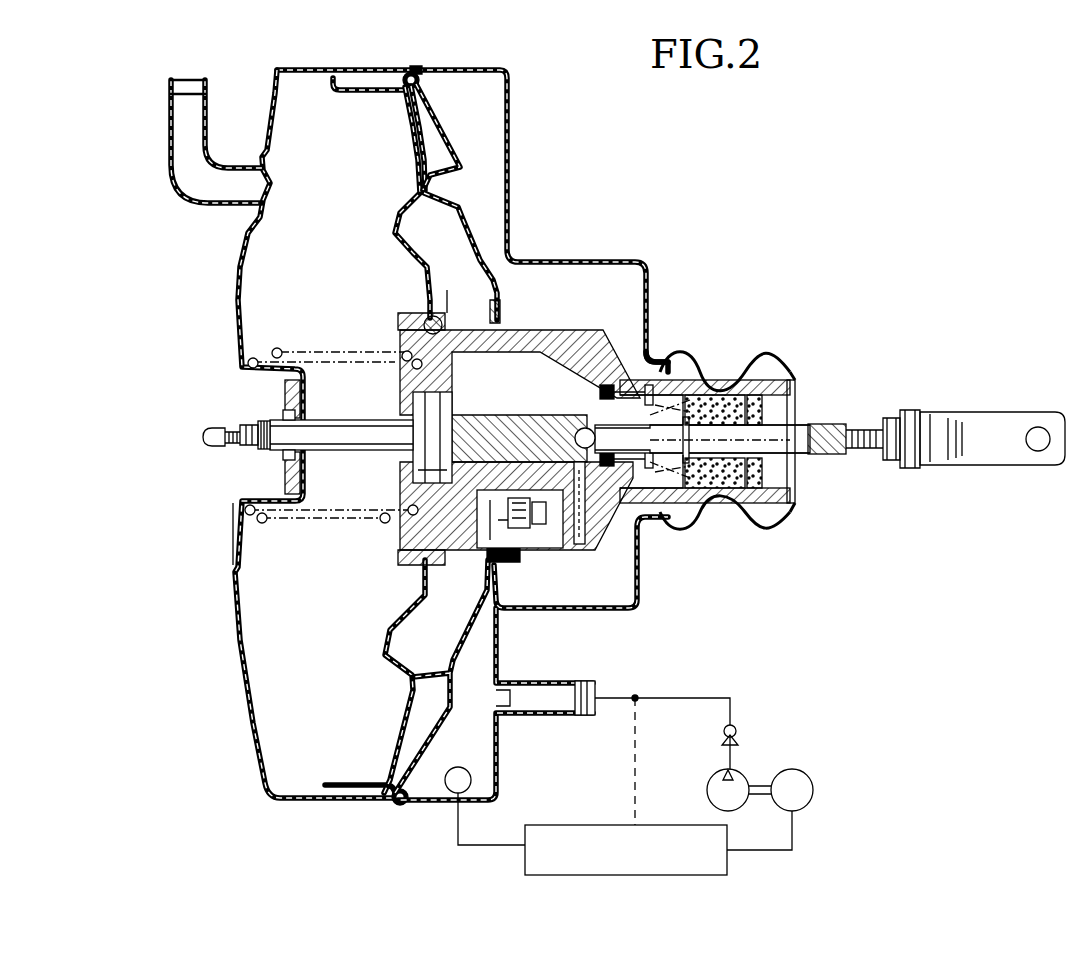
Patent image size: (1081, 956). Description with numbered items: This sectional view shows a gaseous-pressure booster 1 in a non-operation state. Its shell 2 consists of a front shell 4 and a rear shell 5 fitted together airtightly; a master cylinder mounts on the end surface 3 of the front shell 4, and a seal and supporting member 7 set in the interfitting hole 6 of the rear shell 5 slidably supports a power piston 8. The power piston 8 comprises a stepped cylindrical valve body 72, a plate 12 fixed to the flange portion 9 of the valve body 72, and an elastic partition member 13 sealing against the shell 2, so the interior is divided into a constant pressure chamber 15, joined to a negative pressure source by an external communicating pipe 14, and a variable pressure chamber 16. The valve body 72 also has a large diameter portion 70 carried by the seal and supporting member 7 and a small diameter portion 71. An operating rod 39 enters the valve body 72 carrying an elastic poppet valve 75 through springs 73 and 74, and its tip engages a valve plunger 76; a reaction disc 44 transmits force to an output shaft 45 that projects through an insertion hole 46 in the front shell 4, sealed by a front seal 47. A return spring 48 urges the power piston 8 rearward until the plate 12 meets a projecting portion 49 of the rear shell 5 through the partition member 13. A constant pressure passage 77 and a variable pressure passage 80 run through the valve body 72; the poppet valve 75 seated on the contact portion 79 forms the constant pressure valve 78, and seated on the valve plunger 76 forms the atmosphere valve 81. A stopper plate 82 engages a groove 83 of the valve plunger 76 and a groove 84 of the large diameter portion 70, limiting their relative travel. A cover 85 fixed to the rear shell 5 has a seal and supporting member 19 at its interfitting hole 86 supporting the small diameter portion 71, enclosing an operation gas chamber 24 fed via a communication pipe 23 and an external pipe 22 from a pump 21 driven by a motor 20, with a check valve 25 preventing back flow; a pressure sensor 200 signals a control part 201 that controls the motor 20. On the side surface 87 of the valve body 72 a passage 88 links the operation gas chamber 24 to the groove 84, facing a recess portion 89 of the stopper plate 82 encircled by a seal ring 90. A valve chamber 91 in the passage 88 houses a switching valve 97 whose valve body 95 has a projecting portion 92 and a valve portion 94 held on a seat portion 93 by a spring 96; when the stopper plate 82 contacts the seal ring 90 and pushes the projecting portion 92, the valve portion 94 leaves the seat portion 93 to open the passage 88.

The booster of the gaseous pressure type 1 is at (857, 198).
The shell 2 is at (268, 106).
The end surface 3 is at (240, 358).
The front shell 4 is at (238, 278).
The rear shell 5 is at (440, 132).
The interfitting hole 6 is at (515, 266).
The seal and supporting member 7 is at (507, 266).
The power piston 8 is at (398, 322).
The flange portion 9 is at (408, 300).
The plate 12 is at (396, 214).
The partition member 13 is at (414, 213).
The external communicating pipe 14 is at (170, 137).
The constant pressure chamber 15 is at (280, 255).
The variable pressure chamber 16 is at (455, 257).
The seal and supporting member 19 is at (683, 366).
The motor 20 is at (797, 770).
The pump 21 is at (714, 778).
The external pipe 22 is at (672, 698).
The communication pipe 23 is at (555, 716).
The operation gas chamber 24 is at (478, 756).
The check valve 25 is at (736, 727).
The operating rod 39 is at (860, 420).
The reaction disc 44 is at (440, 385).
The output shaft 45 is at (346, 432).
The insertion hole 46 is at (310, 462).
The front seal 47 is at (285, 458).
The return spring 48 is at (320, 345).
The projecting portion 49 is at (402, 180).
The large diameter portion 70 is at (575, 300).
The small diameter portion 71 is at (746, 368).
The valve body 72 is at (650, 330).
The spring 73 is at (706, 370).
The spring 74 is at (742, 437).
The poppet valve 75 is at (635, 382).
The valve plunger 76 is at (595, 340).
The constant pressure passage 77 is at (540, 370).
The constant pressure valve 78 is at (655, 350).
The contact portion 79 is at (630, 300).
The variable pressure passage 80 is at (452, 670).
The atmosphere valve 81 is at (640, 508).
The stopper plate 82 is at (628, 560).
The groove 83 is at (596, 380).
The groove 84 is at (612, 505).
The cover 85 is at (510, 126).
The interfitting hole 86 is at (700, 510).
The side surface 87 is at (622, 545).
The passage 88 is at (545, 530).
The recess portion 89 is at (625, 525).
The seal ring 90 is at (595, 555).
The valve chamber 91 is at (530, 545).
The projecting portion 92 is at (585, 525).
The seat portion 93 is at (590, 540).
The valve portion 94 is at (548, 545).
The valve body 95 is at (560, 530).
The spring 96 is at (515, 580).
The switching valve 97 is at (536, 560).
The pressure sensor 200 is at (457, 767).
The control part 201 is at (727, 866).